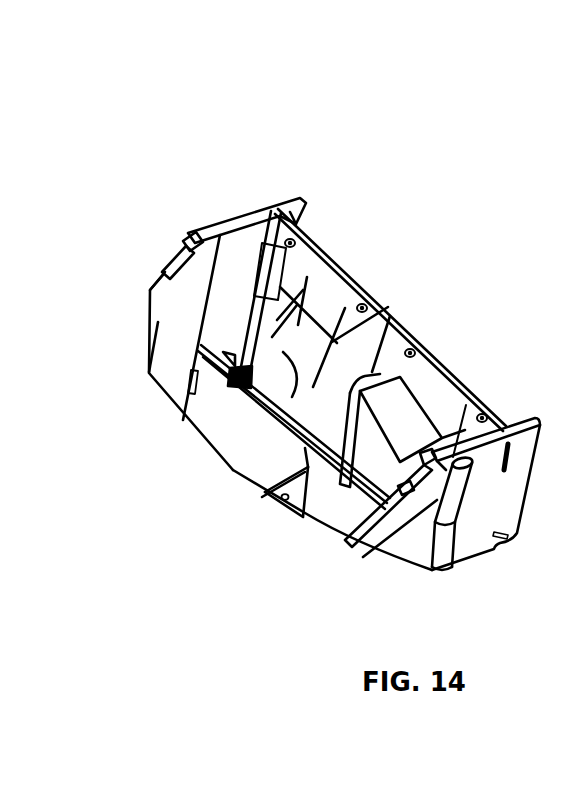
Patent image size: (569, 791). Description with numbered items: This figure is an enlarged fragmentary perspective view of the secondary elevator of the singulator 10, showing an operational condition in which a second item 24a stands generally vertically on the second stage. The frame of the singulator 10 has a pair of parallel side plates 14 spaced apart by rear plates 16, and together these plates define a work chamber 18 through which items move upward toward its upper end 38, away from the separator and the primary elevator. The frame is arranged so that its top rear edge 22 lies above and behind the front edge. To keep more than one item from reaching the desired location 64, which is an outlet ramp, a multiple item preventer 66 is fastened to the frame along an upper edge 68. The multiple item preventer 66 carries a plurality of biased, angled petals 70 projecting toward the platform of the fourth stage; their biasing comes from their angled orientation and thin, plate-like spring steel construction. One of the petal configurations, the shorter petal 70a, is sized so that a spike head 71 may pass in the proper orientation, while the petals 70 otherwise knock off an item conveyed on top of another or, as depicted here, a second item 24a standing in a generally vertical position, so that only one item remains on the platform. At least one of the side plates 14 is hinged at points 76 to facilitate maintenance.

The singulator 10 is at (332, 108).
The side plate 14 is at (178, 292).
The rear plate 16 is at (448, 364).
The work chamber 18 is at (218, 410).
The top rear edge 22 is at (244, 228).
The second item 24a is at (330, 276).
The upper end 38 is at (240, 268).
The desired location 64 is at (335, 420).
The multiple item preventer 66 is at (398, 340).
The upper edge 68 is at (360, 290).
The petal 70 is at (343, 385).
The petal 70a is at (397, 427).
The spike head 71 is at (300, 430).
The hinge point 76 is at (450, 503).